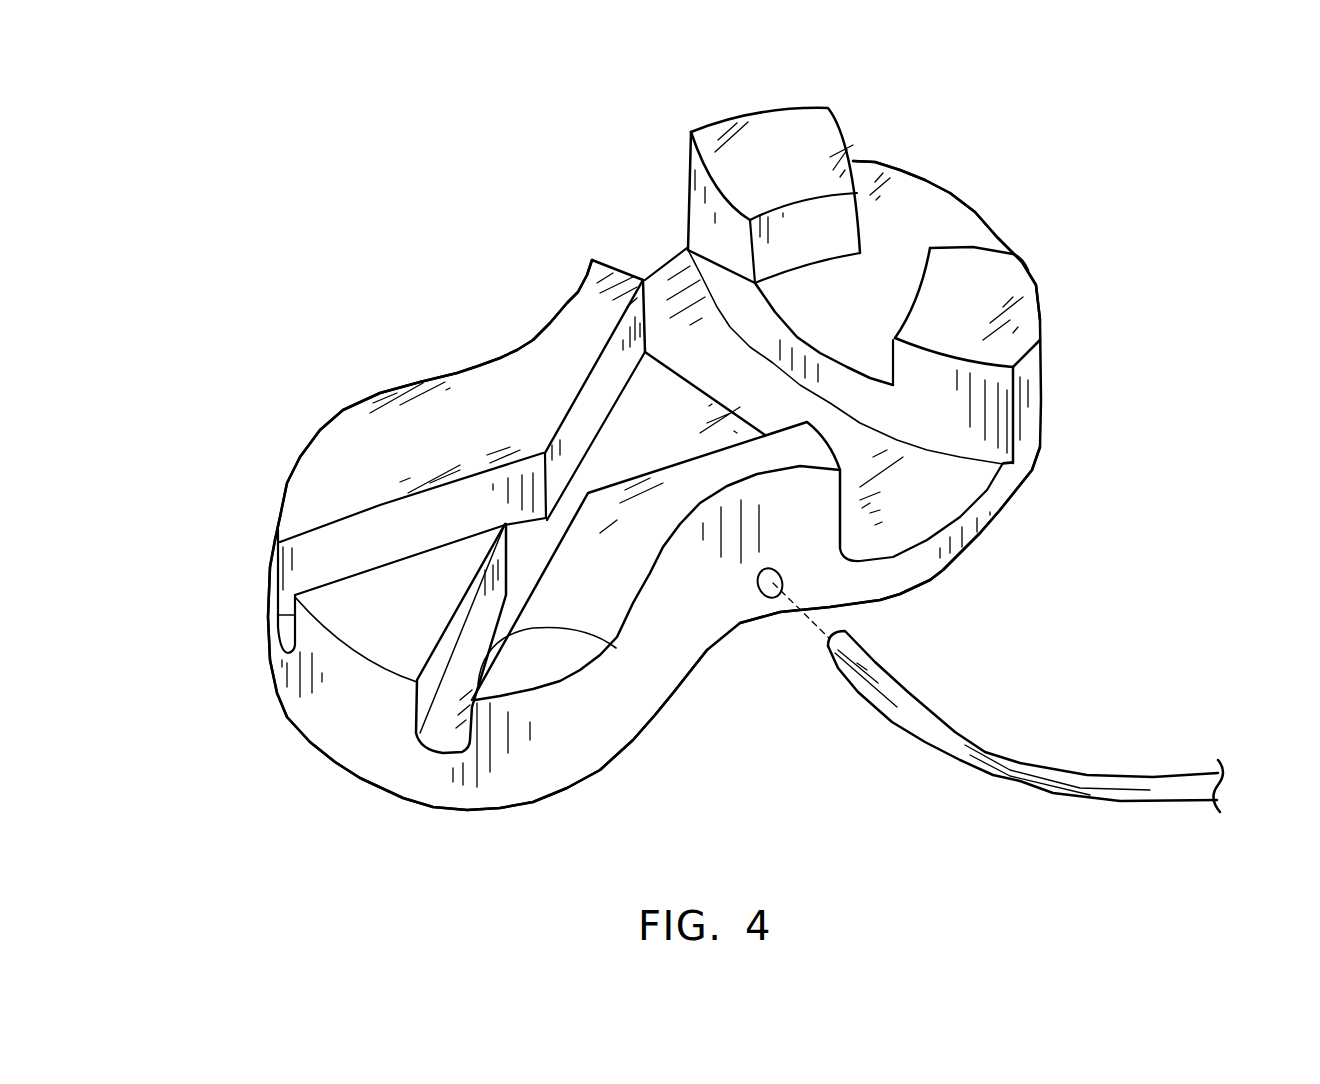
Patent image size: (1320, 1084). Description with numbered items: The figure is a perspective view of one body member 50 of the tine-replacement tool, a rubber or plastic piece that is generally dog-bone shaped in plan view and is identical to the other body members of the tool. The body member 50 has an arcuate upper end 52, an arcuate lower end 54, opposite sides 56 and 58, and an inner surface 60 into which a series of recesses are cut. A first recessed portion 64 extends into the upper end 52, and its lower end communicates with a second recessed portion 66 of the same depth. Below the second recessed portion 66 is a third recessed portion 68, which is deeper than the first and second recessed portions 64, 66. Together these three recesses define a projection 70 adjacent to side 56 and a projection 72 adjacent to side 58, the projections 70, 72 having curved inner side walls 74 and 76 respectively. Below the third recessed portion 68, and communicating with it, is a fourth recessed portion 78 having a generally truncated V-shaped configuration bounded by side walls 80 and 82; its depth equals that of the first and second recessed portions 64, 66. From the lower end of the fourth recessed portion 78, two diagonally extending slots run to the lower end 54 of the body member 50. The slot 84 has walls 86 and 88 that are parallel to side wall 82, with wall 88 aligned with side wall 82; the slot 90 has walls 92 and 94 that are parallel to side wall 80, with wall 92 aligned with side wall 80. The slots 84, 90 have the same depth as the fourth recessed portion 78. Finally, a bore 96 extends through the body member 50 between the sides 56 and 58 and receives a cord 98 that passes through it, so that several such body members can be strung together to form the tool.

The body member 50 is at (1067, 252).
The upper end 52 is at (978, 198).
The lower end 54 is at (320, 790).
The side 56 is at (515, 340).
The side 58 is at (887, 620).
The inner surface 60 is at (482, 434).
The first recessed portion 64 is at (933, 222).
The second recessed portion 66 is at (838, 306).
The third recessed portion 68 is at (943, 502).
The projection 70 is at (791, 166).
The projection 72 is at (963, 319).
The curved inner side wall 74 is at (831, 246).
The curved inner side wall 76 is at (913, 300).
The fourth recessed portion 78 is at (668, 434).
The side wall 80 is at (643, 280).
The side wall 82 is at (688, 458).
The slot 84 is at (300, 572).
The wall 86 is at (423, 538).
The wall 88 is at (356, 568).
The slot 90 is at (435, 753).
The wall 92 is at (420, 665).
The wall 94 is at (520, 628).
The bore 96 is at (775, 598).
The cord 98 is at (923, 713).